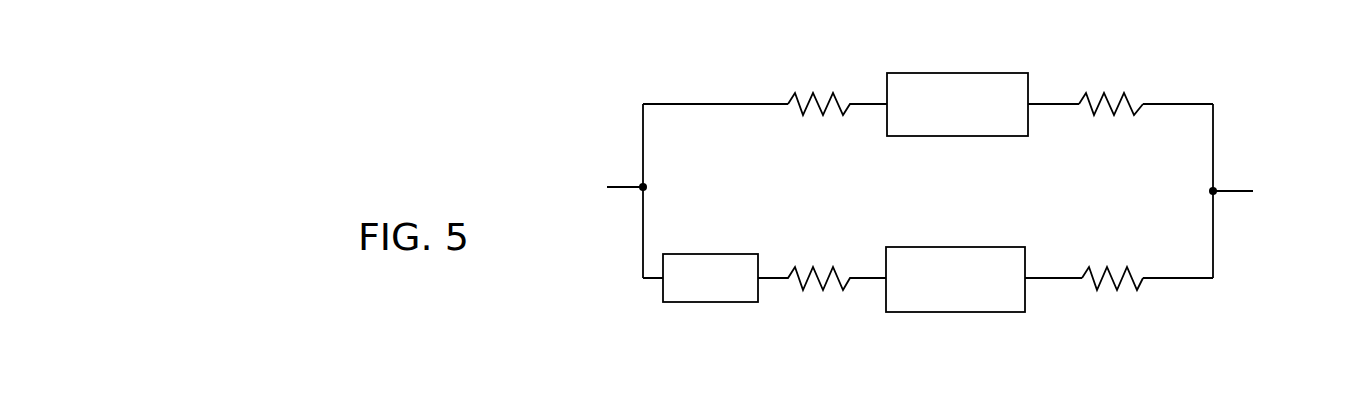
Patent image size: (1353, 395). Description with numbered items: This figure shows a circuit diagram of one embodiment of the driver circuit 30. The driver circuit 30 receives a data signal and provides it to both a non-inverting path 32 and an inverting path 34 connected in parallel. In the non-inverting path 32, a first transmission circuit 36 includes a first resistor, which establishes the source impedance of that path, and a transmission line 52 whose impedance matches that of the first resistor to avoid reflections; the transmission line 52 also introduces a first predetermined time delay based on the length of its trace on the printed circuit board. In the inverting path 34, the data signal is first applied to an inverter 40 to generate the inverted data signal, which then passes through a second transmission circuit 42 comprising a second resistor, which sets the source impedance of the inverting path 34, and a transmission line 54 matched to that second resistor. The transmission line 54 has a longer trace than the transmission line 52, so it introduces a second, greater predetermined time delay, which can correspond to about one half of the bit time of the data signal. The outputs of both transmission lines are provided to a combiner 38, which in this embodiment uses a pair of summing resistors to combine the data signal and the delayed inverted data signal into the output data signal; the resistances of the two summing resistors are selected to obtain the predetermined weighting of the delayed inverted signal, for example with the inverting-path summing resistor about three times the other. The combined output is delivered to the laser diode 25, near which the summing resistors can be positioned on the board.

The laser diode 25 is at (1294, 191).
The driver circuit 30 is at (494, 97).
The non-inverting path 32 is at (663, 88).
The inverting path 34 is at (663, 322).
The first transmission circuit 36 is at (861, 81).
The combiner 38 is at (1220, 314).
The inverter 40 is at (723, 254).
The second transmission circuit 42 is at (872, 321).
The transmission line 52 is at (906, 136).
The transmission line 54 is at (978, 247).